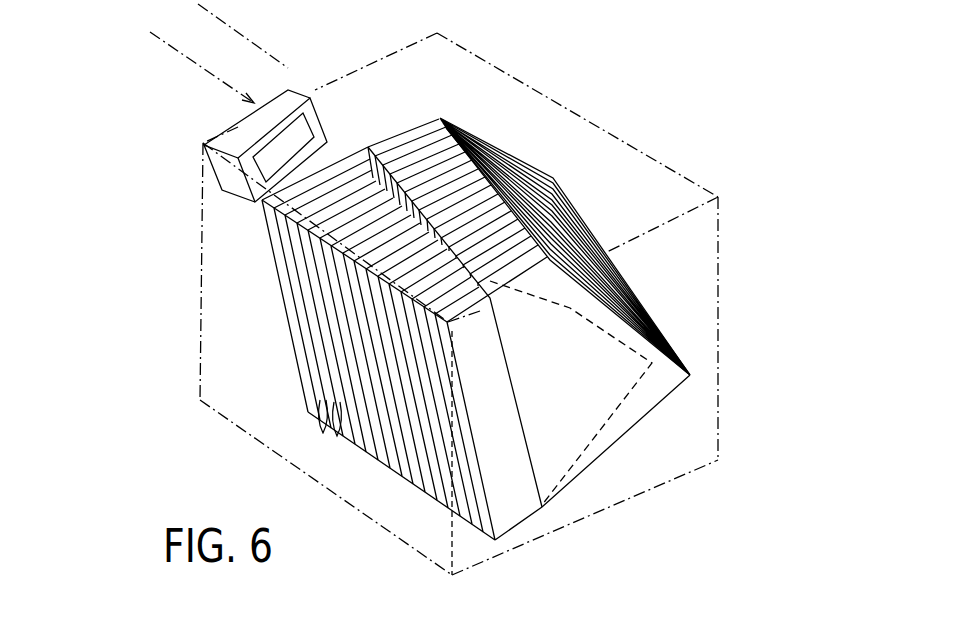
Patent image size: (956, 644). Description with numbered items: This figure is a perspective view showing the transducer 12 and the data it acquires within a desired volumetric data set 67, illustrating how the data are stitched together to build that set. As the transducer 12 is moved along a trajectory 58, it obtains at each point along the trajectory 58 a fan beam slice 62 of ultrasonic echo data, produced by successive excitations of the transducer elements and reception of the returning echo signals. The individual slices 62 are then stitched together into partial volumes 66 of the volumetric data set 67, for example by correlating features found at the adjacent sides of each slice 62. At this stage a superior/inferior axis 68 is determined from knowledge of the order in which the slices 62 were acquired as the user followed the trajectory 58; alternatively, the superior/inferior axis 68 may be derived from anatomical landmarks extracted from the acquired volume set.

The transducer 12 is at (226, 175).
The trajectory 58 is at (196, 63).
The fan beam slice 62 is at (336, 432).
The partial volume 66 is at (505, 482).
The volumetric data set 67 is at (700, 183).
The superior/inferior axis 68 is at (247, 38).